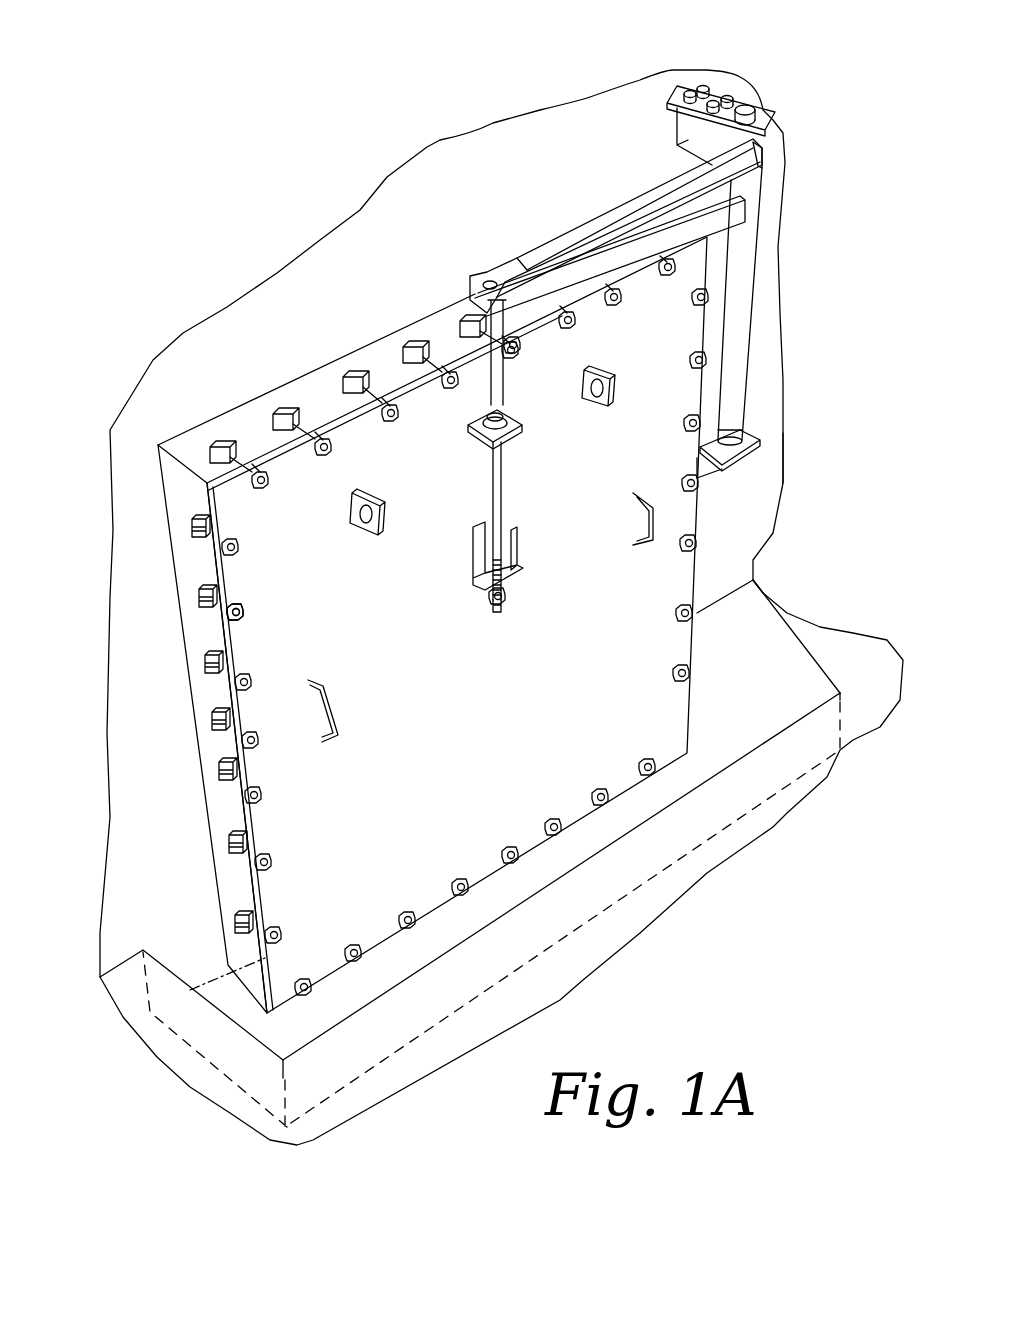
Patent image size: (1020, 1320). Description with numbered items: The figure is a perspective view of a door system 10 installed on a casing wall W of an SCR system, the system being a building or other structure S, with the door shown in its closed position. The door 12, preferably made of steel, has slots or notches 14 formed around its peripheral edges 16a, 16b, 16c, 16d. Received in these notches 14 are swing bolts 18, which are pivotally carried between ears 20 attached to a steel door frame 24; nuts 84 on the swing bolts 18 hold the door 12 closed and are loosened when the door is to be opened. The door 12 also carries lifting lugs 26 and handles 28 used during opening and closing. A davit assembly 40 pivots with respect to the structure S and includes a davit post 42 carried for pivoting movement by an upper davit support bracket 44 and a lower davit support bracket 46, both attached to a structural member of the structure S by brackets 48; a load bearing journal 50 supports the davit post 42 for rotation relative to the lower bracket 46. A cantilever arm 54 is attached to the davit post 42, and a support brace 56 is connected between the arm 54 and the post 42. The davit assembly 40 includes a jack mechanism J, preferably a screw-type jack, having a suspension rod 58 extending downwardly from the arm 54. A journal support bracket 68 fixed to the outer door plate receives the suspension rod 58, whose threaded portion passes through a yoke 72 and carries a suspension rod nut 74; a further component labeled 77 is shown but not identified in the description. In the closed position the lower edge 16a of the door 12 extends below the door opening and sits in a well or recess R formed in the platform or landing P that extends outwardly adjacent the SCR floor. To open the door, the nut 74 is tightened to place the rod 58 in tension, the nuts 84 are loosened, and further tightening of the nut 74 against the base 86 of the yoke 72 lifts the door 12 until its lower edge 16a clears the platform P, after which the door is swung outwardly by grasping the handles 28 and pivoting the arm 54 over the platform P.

The casing wall W is at (632, 85).
The door system 10 is at (419, 625).
The door 12 is at (660, 733).
The slots or notches 14 is at (262, 876).
The lower edge 16a is at (435, 895).
The peripheral edge 16b is at (275, 952).
The peripheral edge 16c is at (430, 385).
The peripheral edge 16d is at (690, 508).
The swing bolts 18 is at (243, 457).
The ears 20 is at (207, 593).
The door frame 24 is at (183, 480).
The lifting lugs 26 is at (358, 532).
The handles 28 is at (633, 513).
The davit assembly 40 is at (662, 282).
The davit post 42 is at (737, 330).
The upper davit support bracket 44 is at (783, 127).
The lower davit support bracket 46 is at (760, 457).
The brackets 48 is at (675, 138).
The load bearing journal 50 is at (752, 435).
The cantilever arm 54 is at (728, 213).
The support brace 56 is at (600, 227).
The suspension rod 58 is at (500, 467).
The journal support bracket 68 is at (510, 423).
The yoke 72 is at (480, 545).
The suspension rod nut 74 is at (506, 600).
The upper tube 77 is at (507, 360).
The nuts 84 is at (243, 610).
The base of yoke 86 is at (490, 605).
The jack mechanism J is at (504, 478).
The SCR structure S is at (800, 480).
The platform or landing P is at (867, 663).
The well or recess R is at (763, 720).